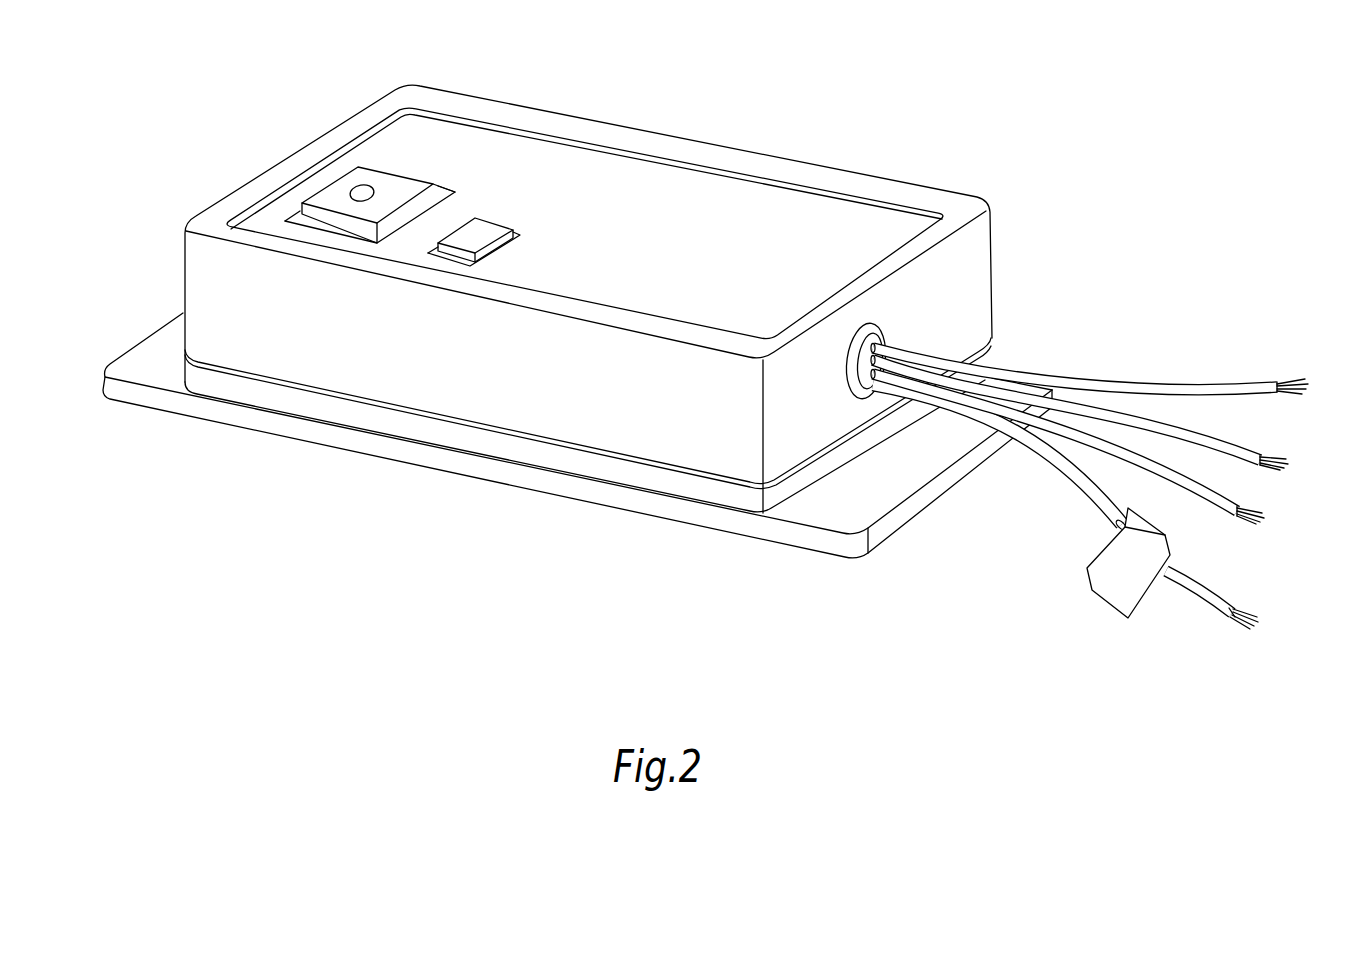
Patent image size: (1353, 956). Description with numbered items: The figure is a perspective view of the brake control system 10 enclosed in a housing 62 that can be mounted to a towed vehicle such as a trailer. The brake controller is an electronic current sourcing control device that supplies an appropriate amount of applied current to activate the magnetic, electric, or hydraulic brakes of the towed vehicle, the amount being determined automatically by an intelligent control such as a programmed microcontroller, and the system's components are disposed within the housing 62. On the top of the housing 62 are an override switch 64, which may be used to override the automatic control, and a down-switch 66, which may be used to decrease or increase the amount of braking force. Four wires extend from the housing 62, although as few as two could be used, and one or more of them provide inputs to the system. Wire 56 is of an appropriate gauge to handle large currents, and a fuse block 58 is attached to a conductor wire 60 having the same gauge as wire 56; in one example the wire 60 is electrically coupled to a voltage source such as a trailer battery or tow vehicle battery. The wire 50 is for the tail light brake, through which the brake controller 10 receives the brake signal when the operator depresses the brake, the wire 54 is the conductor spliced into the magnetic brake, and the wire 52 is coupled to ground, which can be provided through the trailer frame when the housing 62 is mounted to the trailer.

The brake control system 10 is at (863, 100).
The wire 50 is at (1242, 385).
The wire 52 is at (1233, 449).
The wire 54 is at (1228, 503).
The wire 56 is at (1072, 482).
The fuse block 58 is at (1095, 562).
The conductor wire 60 is at (1213, 595).
The housing 62 is at (715, 152).
The override switch 64 is at (403, 186).
The down-switch 66 is at (492, 232).